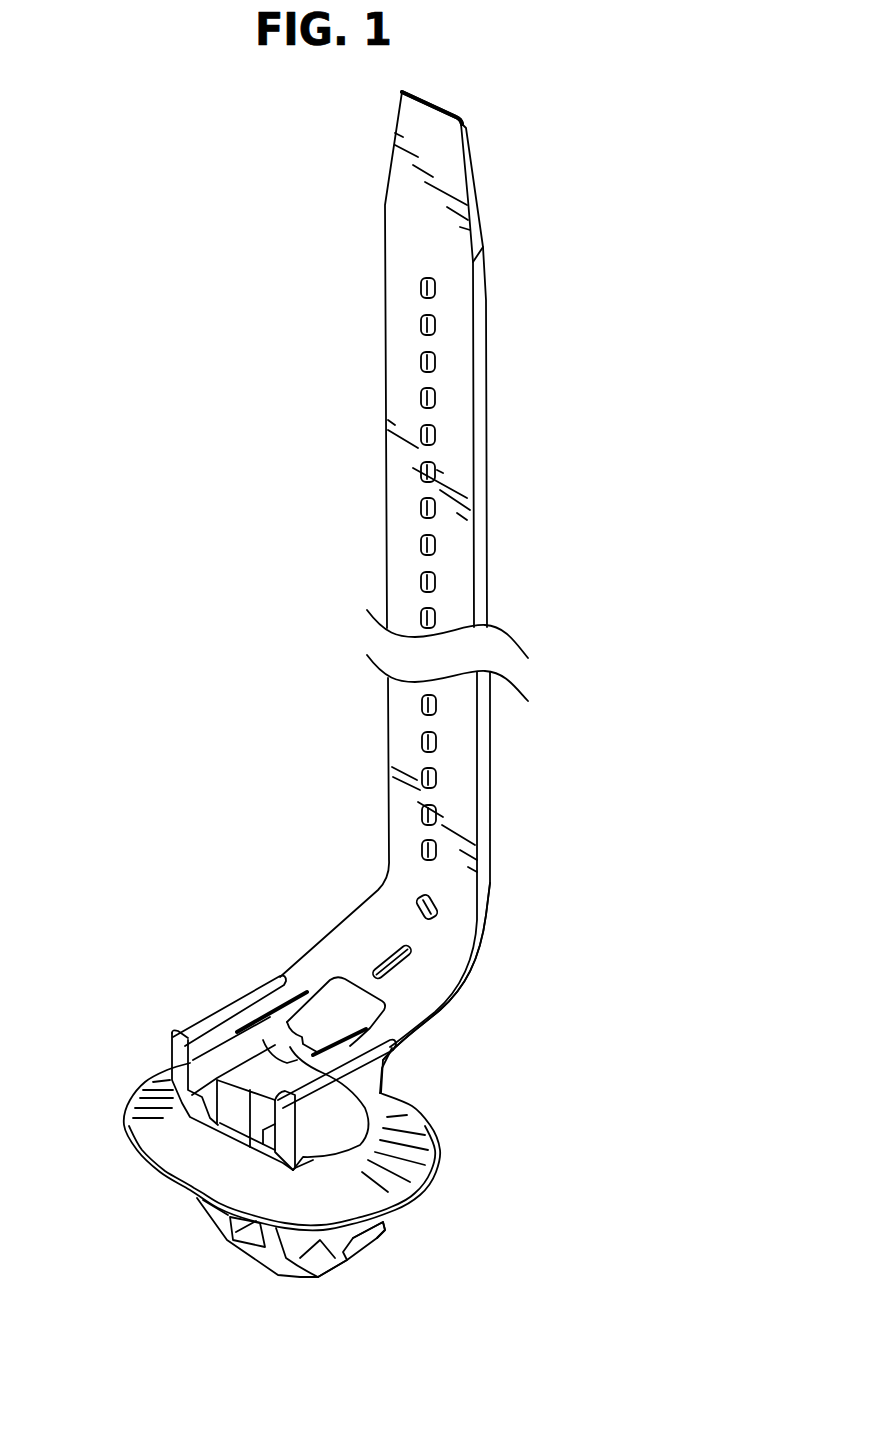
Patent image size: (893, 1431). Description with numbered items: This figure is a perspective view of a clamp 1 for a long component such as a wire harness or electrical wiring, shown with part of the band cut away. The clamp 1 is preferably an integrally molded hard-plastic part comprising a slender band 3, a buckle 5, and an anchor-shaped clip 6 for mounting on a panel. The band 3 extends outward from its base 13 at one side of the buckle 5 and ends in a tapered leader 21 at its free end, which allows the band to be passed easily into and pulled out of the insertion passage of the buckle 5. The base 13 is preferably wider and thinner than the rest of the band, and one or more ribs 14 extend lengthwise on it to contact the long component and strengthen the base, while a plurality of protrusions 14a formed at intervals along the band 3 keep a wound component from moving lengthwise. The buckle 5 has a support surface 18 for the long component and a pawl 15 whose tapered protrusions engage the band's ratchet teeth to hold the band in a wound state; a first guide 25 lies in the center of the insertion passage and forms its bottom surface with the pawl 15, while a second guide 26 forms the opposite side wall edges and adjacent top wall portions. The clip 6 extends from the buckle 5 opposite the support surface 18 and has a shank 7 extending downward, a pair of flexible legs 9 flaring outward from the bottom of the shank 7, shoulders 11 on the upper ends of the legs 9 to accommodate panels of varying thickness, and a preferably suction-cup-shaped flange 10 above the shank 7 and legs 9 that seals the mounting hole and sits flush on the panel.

The clamp 1 is at (286, 517).
The band 3 is at (493, 437).
The buckle 5 is at (166, 1050).
The anchor-shaped clip 6 is at (236, 1279).
The shank 7 is at (227, 1240).
The legs 9 is at (350, 1243).
The flange 10 is at (413, 1132).
The shoulders 11 is at (380, 1238).
The base 13 is at (412, 985).
The ribs 14 is at (388, 953).
The protrusions 14a is at (420, 397).
The pawl 15 is at (267, 1068).
The support surface 18 is at (243, 1035).
The tapered leader 21 is at (438, 147).
The first guide 25 is at (240, 1102).
The second guide 26 is at (225, 1007).